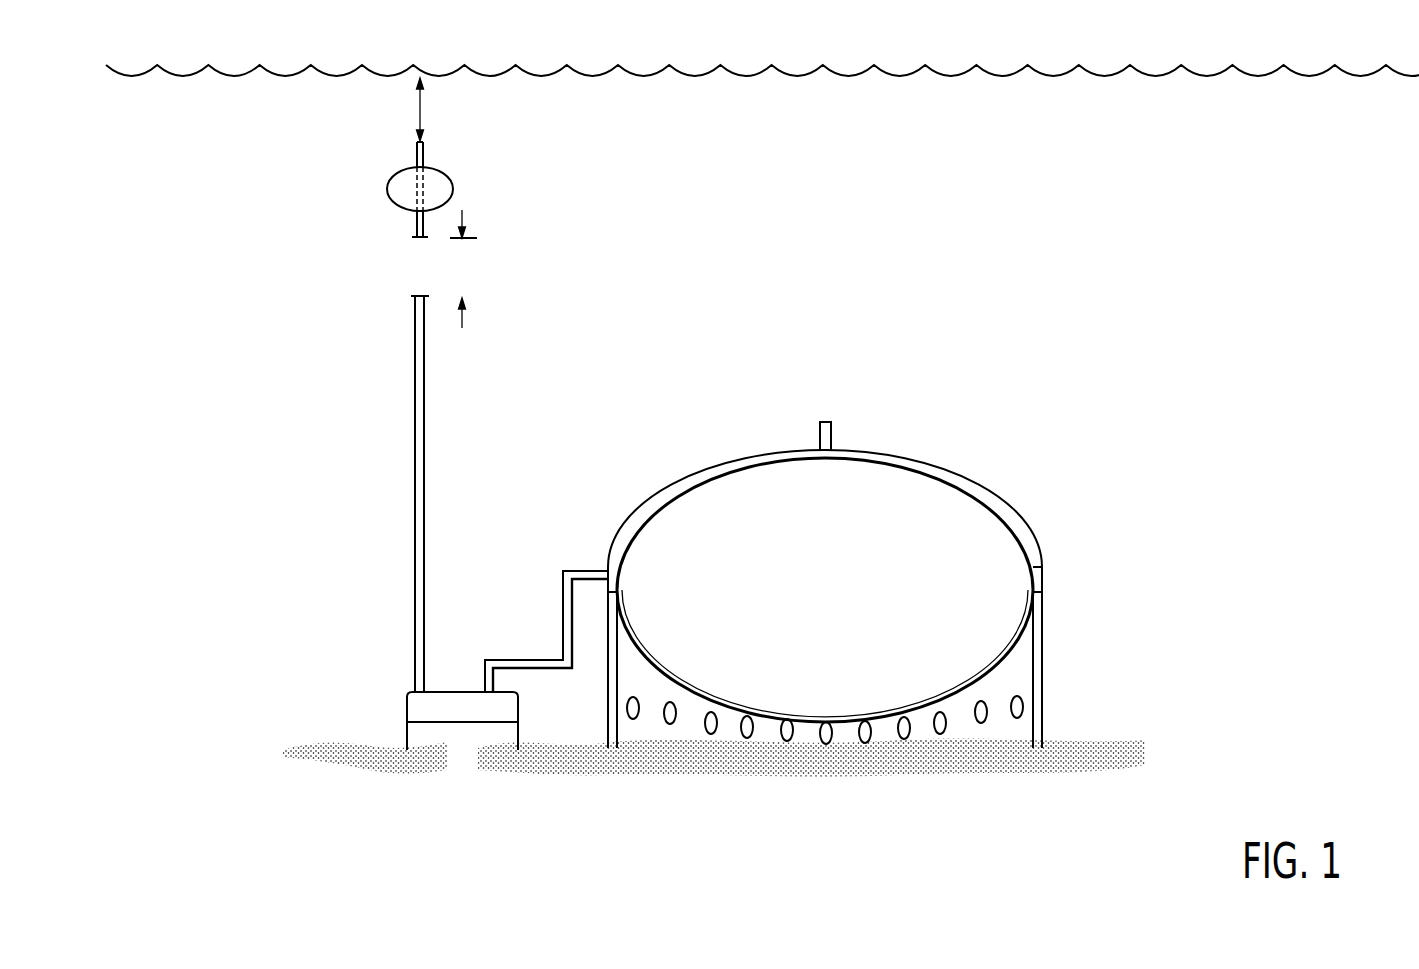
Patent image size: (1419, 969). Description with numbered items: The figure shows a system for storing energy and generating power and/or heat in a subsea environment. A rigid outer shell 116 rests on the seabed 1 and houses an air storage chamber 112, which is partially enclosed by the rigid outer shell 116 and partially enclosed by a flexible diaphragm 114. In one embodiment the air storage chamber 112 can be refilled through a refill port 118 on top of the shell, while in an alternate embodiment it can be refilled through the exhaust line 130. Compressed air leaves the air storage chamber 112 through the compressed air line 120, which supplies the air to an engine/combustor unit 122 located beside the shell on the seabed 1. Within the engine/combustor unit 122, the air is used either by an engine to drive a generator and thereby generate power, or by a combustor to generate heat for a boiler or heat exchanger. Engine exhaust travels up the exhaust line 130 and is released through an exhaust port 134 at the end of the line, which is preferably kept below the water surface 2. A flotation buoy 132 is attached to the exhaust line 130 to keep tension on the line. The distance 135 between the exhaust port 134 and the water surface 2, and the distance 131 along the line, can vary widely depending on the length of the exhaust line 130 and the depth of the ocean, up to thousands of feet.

The seabed 1 is at (463, 765).
The water surface 2 is at (1304, 77).
The air storage chamber 112 is at (846, 628).
The flexible diaphragm 114 is at (669, 663).
The rigid outer shell 116 is at (1047, 548).
The refill port 118 is at (827, 421).
The compressed air line 120 is at (580, 569).
The engine/combustor unit 122 is at (407, 708).
The exhaust line 130 is at (415, 413).
The distance 131 is at (463, 216).
The flotation buoy 132 is at (387, 183).
The exhaust port 134 is at (425, 157).
The distance 135 is at (420, 103).